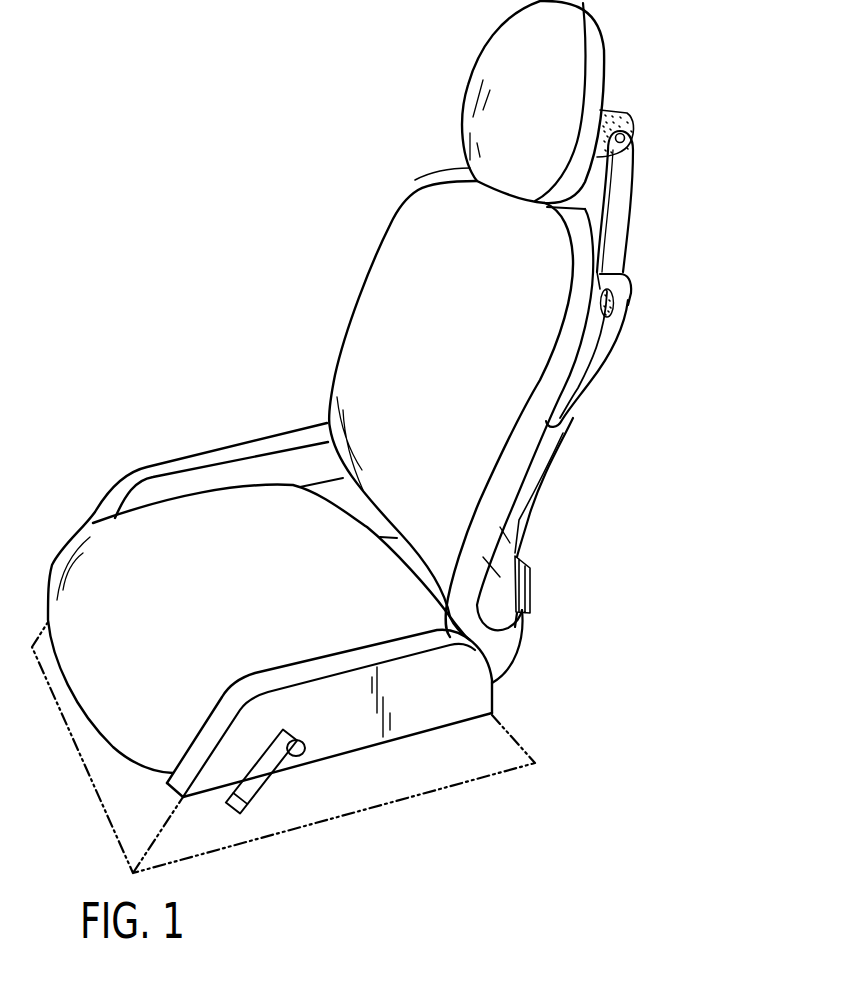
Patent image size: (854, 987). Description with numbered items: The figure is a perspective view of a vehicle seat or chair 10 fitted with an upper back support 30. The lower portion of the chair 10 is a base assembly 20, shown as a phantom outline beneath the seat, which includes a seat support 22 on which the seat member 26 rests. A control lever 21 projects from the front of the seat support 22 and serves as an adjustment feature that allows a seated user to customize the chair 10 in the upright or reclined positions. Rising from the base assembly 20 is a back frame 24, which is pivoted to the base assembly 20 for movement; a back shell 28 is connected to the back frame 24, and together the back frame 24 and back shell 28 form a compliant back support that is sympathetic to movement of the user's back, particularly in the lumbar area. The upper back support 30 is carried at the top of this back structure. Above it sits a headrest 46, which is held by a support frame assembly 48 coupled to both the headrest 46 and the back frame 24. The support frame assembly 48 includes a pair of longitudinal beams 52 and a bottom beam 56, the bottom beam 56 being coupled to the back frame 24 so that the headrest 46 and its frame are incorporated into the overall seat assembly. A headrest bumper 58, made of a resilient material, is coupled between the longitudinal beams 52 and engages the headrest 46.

The vehicle seat or chair 10 is at (293, 173).
The base assembly 20 is at (487, 760).
The control lever 21 is at (263, 785).
The seat support 22 is at (463, 703).
The back frame 24 is at (539, 496).
The seat member 26 is at (258, 616).
The back shell 28 is at (600, 370).
The upper back support 30 is at (600, 258).
The headrest 46 is at (597, 33).
The support frame assembly 48 is at (625, 187).
The longitudinal beams 52 is at (614, 222).
The bottom beam 56 is at (530, 590).
The headrest bumper 58 is at (633, 123).